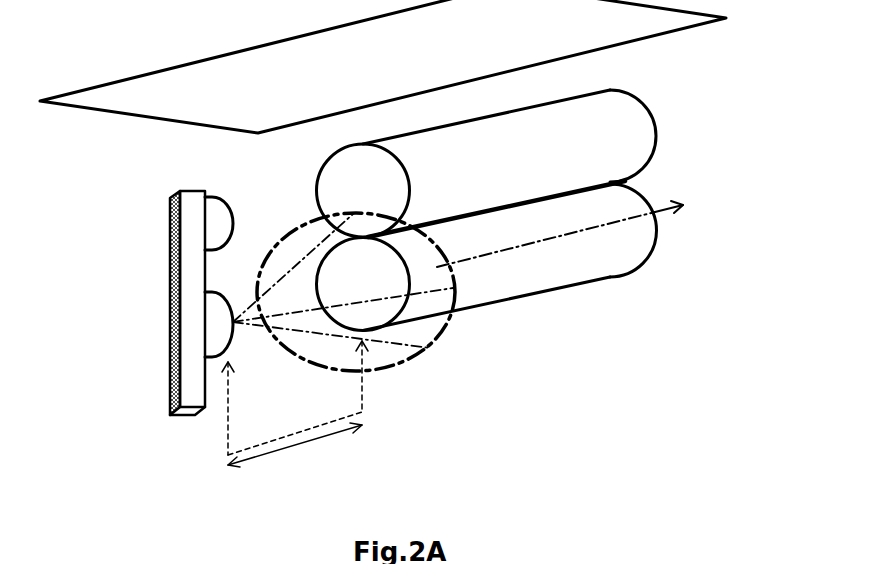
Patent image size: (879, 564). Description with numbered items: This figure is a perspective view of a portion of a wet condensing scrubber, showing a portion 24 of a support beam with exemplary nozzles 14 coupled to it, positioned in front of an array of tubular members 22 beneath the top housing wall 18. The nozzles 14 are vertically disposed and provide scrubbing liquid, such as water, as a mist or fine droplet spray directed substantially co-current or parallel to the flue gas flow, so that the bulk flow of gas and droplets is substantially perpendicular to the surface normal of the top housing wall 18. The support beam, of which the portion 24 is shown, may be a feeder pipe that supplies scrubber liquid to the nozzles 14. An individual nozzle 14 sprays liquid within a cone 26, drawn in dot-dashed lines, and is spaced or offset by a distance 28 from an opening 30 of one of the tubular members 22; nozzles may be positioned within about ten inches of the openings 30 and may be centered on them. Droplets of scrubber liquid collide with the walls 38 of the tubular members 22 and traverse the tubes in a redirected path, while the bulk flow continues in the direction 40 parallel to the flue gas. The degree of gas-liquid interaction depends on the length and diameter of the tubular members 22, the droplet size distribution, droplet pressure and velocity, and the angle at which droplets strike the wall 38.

The nozzles 14 is at (217, 330).
The top housing wall 18 is at (262, 97).
The tubular members 22 is at (503, 216).
The portion of a support beam 24 is at (170, 396).
The cone 26 is at (437, 340).
The distance 28 is at (312, 445).
The opening 30 is at (403, 267).
The walls of the tubular members 38 is at (575, 268).
The direction 40 is at (668, 213).